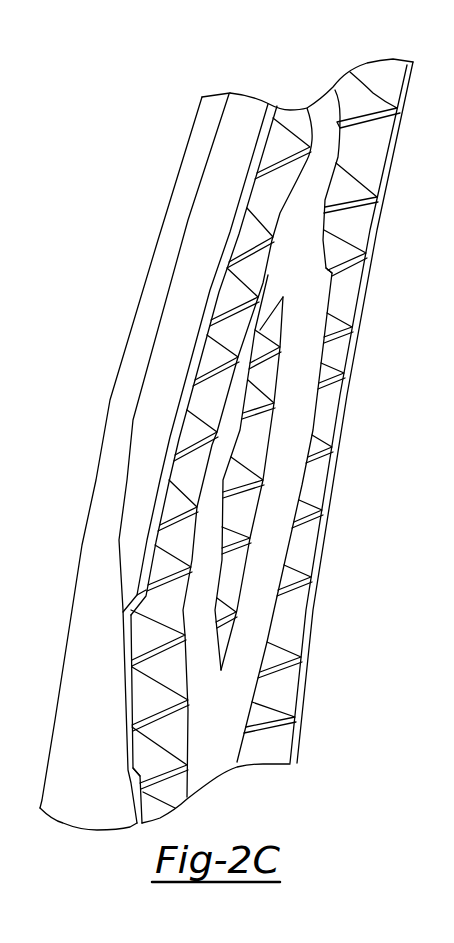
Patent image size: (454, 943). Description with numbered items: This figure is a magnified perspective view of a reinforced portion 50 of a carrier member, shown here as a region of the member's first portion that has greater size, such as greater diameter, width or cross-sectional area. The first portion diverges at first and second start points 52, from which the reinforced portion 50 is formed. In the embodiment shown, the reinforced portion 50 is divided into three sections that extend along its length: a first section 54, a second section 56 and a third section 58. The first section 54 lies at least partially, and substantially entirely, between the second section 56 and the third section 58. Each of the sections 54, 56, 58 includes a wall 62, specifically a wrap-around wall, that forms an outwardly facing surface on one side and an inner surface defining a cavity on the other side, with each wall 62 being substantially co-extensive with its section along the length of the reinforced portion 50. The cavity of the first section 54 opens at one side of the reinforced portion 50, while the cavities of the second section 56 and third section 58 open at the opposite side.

The reinforced portion 50 is at (192, 480).
The first and second start points 52 is at (252, 253).
The first section 54 is at (268, 368).
The second section 56 is at (229, 418).
The third section 58 is at (270, 480).
The wall 62 is at (207, 582).